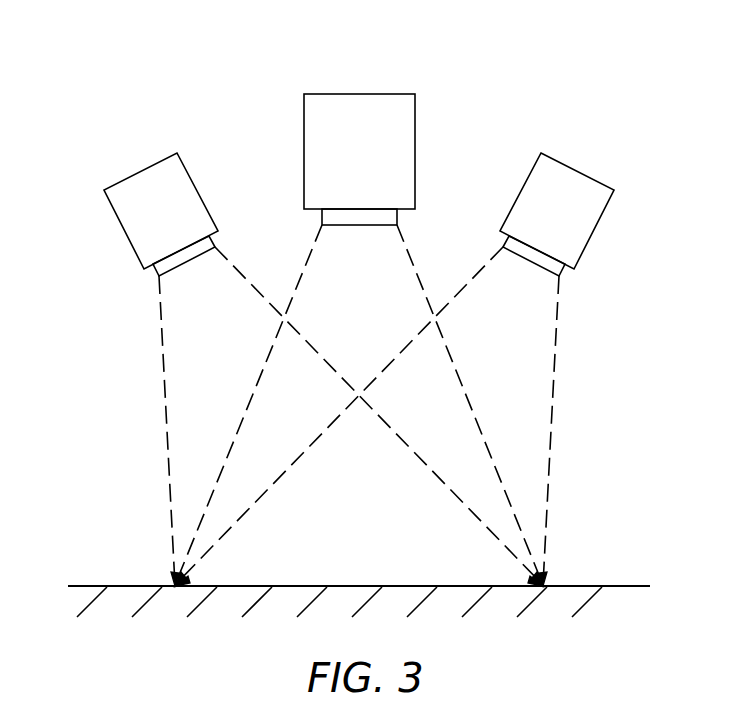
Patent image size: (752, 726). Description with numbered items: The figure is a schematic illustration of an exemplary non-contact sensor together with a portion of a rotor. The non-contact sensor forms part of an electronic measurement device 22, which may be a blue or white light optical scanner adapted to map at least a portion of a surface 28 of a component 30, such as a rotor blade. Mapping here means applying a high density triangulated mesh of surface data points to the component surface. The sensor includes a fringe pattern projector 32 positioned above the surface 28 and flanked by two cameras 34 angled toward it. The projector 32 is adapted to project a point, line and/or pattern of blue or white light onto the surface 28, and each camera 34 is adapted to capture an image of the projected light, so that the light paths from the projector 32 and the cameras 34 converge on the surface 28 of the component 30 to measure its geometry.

The electronic measurement device 22 is at (593, 107).
The fringe pattern projector 32 is at (415, 117).
The camera 34 is at (137, 170).
The component 30 is at (102, 560).
The surface 28 is at (590, 585).